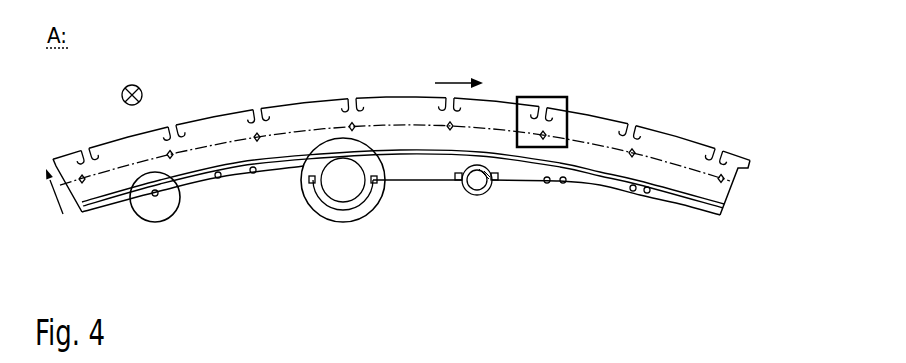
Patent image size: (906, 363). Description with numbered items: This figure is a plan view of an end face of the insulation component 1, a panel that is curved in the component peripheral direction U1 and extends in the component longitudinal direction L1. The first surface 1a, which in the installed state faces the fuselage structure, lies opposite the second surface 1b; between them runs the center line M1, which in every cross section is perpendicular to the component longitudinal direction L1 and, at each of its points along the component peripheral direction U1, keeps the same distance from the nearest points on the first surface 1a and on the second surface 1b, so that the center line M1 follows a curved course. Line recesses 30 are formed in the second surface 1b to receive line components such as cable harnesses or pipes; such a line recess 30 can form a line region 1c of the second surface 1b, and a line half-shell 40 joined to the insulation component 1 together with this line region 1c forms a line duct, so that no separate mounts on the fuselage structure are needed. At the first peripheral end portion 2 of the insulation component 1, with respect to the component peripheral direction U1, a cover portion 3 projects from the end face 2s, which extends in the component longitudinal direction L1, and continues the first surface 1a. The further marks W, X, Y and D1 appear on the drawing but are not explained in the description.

The insulation component 1 is at (761, 103).
The first surface 1a is at (668, 132).
The second surface 1b is at (677, 207).
The line region 1c is at (324, 143).
The first peripheral end portion 2 is at (731, 196).
The end face 2s is at (737, 182).
The cover portion 3 is at (751, 162).
The line recesses 30 is at (219, 195).
The line half-shells 40 is at (481, 164).
The shaft W is at (342, 223).
The detail region X is at (137, 219).
The detail region Y is at (542, 96).
The center line M1 is at (237, 139).
The component longitudinal direction L1 is at (131, 84).
The component peripheral direction U1 is at (452, 80).
The radial direction D1 is at (45, 195).